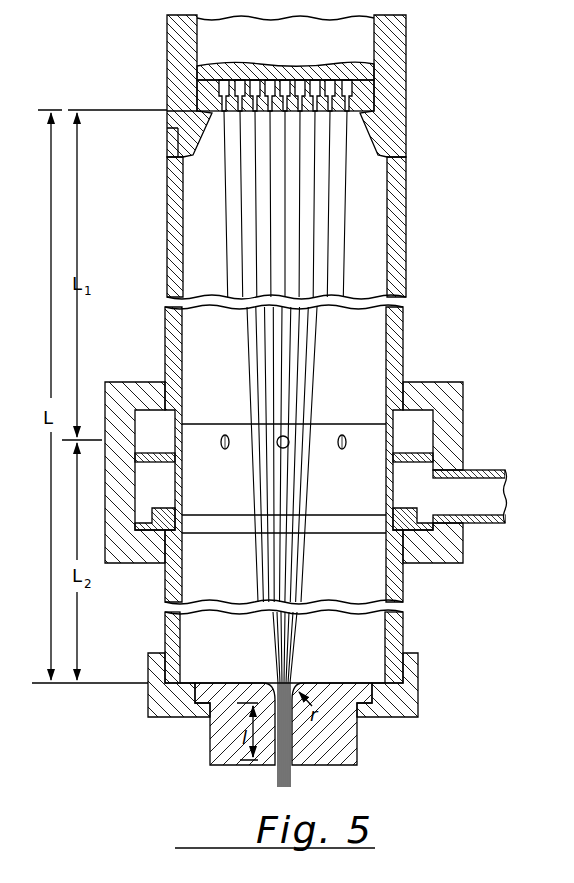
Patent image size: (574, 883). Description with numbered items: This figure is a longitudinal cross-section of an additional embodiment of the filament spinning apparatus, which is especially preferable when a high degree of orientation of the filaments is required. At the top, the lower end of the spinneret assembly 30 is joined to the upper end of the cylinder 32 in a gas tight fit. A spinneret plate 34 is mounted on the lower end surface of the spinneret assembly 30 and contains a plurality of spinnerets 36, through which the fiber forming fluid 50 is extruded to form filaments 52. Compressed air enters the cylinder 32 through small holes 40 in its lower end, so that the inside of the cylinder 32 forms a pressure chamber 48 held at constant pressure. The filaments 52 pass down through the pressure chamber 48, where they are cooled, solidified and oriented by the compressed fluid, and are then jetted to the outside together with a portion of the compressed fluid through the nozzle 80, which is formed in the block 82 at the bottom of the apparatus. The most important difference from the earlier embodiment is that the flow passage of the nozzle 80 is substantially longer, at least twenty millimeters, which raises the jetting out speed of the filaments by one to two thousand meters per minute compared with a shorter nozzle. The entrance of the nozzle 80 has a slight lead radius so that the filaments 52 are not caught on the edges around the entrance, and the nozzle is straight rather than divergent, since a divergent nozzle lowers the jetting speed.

The spinneret assembly 30 is at (390, 48).
The cylinder 32 is at (397, 213).
The spinneret plate 34 is at (363, 95).
The spinnerets 36 is at (345, 113).
The small holes 40 is at (346, 446).
The pressure chamber 48 is at (233, 388).
The fiber forming fluid 50 is at (222, 74).
The filaments 52 is at (273, 388).
The nozzle 80 is at (290, 766).
The nozzle block 82 is at (333, 737).